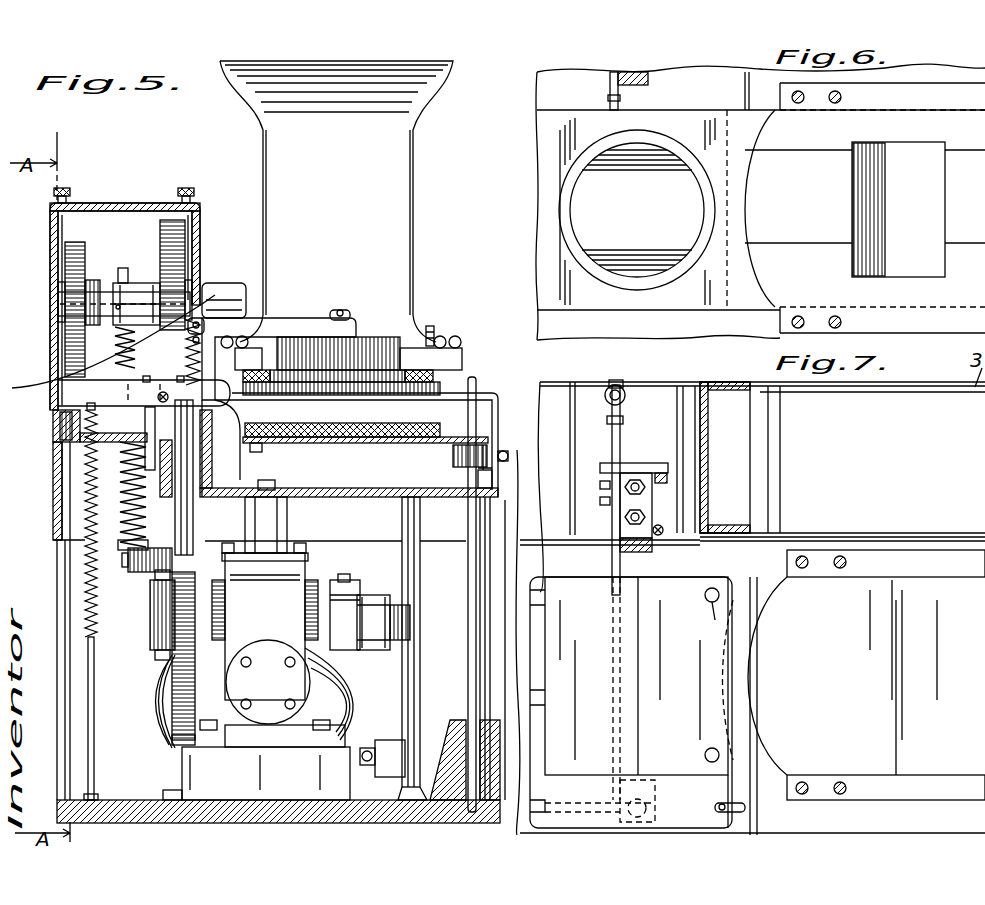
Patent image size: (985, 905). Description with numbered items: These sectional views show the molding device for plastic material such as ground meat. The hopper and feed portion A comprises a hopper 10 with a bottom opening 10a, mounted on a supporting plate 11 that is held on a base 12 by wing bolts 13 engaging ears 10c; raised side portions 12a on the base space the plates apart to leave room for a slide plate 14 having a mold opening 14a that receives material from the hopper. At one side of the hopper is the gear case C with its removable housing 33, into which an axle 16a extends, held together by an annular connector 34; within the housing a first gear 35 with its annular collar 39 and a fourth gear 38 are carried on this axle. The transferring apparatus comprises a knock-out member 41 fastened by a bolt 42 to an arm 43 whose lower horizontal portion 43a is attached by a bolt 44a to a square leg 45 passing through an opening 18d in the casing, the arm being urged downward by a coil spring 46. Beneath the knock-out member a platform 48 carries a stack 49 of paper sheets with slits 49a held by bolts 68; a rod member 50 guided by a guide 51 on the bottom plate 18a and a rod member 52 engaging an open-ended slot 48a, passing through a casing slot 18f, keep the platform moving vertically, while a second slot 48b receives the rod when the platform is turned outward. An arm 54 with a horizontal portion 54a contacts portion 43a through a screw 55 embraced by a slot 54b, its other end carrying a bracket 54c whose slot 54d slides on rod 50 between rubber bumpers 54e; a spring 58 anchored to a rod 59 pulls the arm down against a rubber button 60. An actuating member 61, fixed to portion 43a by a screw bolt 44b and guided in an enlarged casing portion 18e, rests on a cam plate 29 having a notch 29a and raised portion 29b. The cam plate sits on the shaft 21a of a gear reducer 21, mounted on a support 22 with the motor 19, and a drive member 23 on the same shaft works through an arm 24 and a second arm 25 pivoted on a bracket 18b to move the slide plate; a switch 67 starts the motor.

In FIG. 5, the hopper 10 is at (412, 136).
In FIG. 5, the hopper and feed portion A is at (423, 211).
In FIG. 5, the gear case C is at (207, 225).
In FIG. 5, the removable housing 33 is at (122, 205).
In FIG. 5, the first gear 35 is at (170, 223).
In FIG. 5, the fourth gear 38 is at (72, 252).
In FIG. 5, the axle 16a is at (102, 298).
In FIG. 5, the annular collar 39 is at (145, 288).
In FIG. 5, the annular connector 34 is at (232, 290).
In FIG. 5, the coil spring 46 is at (199, 336).
In FIG. 7, the coil spring 46 is at (661, 534).
In FIG. 5, the horizontal portion 43a is at (190, 330).
In FIG. 7, the horizontal portion 43a is at (635, 472).
In FIG. 5, the screw bolt 44b is at (184, 383).
In FIG. 5, the screw 55 is at (162, 391).
In FIG. 7, the screw 55 is at (600, 500).
In FIG. 5, the bolt 44a is at (111, 347).
In FIG. 5, the slot 54b is at (80, 405).
In FIG. 5, the arm 43 is at (295, 322).
In FIG. 6, the arm 43 is at (650, 80).
In FIG. 7, the arm 43 is at (628, 552).
In FIG. 5, the bolt 42 is at (342, 312).
In FIG. 5, the knock-out member 41 is at (367, 348).
In FIG. 5, the wing bolts 13 is at (452, 342).
In FIG. 5, the ears 10c is at (462, 358).
In FIG. 5, the rod member 52 is at (477, 392).
In FIG. 7, the rod member 52 is at (728, 805).
In FIG. 5, the arm 54 is at (310, 467).
In FIG. 6, the arm 54 is at (608, 93).
In FIG. 7, the arm 54 is at (614, 576).
In FIG. 5, the stack of sheets of paper 49 is at (412, 423).
In FIG. 7, the stack of sheets of paper 49 is at (588, 600).
In FIG. 5, the platform 48 is at (453, 443).
In FIG. 7, the platform 48 is at (538, 748).
In FIG. 5, the bracket 54c is at (485, 447).
In FIG. 7, the bracket 54c is at (630, 797).
In FIG. 5, the switch 67 is at (508, 458).
In FIG. 5, the annular rubber bumpers 54e is at (492, 482).
In FIG. 5, the rod member 50 is at (486, 525).
In FIG. 7, the rod member 50 is at (657, 792).
In FIG. 5, the horizontal portion 54a is at (62, 405).
In FIG. 7, the horizontal portion 54a is at (613, 383).
In FIG. 5, the button 60 is at (57, 440).
In FIG. 7, the button 60 is at (606, 393).
In FIG. 5, the spring 58 is at (85, 489).
In FIG. 7, the spring 58 is at (622, 420).
In FIG. 5, the leg 45 is at (146, 420).
In FIG. 5, the opening 18d is at (119, 488).
In FIG. 5, the enlarged portion 18e is at (150, 546).
In FIG. 5, the actuating member 61 is at (181, 507).
In FIG. 5, the notch 29a is at (182, 533).
In FIG. 5, the shaft 21a is at (206, 590).
In FIG. 5, the gear reducer 21 is at (258, 632).
In FIG. 5, the drive member 23 is at (345, 590).
In FIG. 5, the arm 24 is at (373, 597).
In FIG. 5, the second arm 25 is at (413, 630).
In FIG. 5, the motor 19 is at (345, 703).
In FIG. 5, the cam plate 29 is at (185, 652).
In FIG. 5, the raised portion 29b is at (173, 733).
In FIG. 5, the rod 59 is at (95, 656).
In FIG. 5, the support 22 is at (198, 768).
In FIG. 5, the bottom plate 18a is at (150, 805).
In FIG. 5, the bracket 18b is at (397, 740).
In FIG. 5, the guide 51 is at (447, 735).
In FIG. 6, the slide plate 14 is at (553, 135).
In FIG. 6, the mold opening 14a is at (578, 208).
In FIG. 6, the supporting plate 11 is at (942, 95).
In FIG. 6, the bottom opening 10a is at (945, 158).
In FIG. 7, the base 12 is at (790, 640).
In FIG. 7, the raised side portions 12a is at (885, 564).
In FIG. 7, the slot 18f is at (757, 805).
In FIG. 7, the slits 49a is at (730, 580).
In FIG. 7, the bolts 68 is at (705, 600).
In FIG. 7, the slot 54d is at (637, 820).
In FIG. 7, the second slot 48b is at (553, 795).
In FIG. 7, the open-ended slot 48a is at (727, 815).